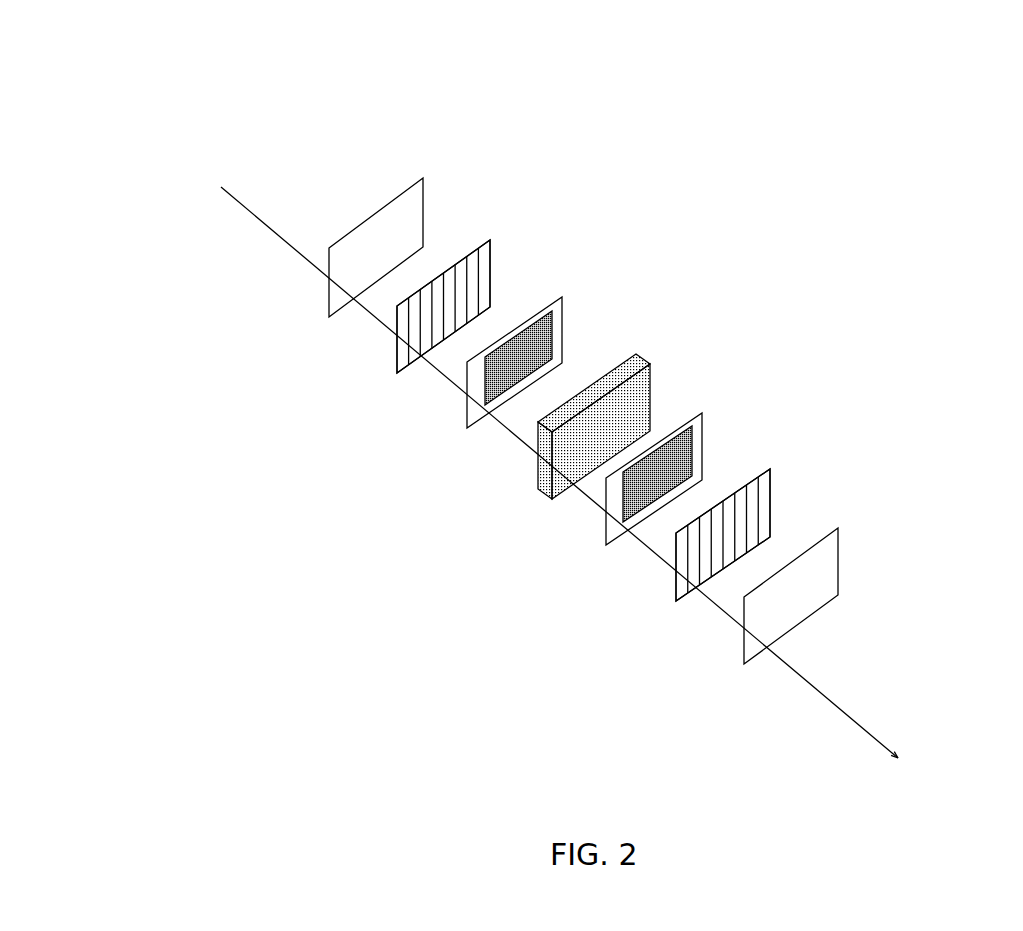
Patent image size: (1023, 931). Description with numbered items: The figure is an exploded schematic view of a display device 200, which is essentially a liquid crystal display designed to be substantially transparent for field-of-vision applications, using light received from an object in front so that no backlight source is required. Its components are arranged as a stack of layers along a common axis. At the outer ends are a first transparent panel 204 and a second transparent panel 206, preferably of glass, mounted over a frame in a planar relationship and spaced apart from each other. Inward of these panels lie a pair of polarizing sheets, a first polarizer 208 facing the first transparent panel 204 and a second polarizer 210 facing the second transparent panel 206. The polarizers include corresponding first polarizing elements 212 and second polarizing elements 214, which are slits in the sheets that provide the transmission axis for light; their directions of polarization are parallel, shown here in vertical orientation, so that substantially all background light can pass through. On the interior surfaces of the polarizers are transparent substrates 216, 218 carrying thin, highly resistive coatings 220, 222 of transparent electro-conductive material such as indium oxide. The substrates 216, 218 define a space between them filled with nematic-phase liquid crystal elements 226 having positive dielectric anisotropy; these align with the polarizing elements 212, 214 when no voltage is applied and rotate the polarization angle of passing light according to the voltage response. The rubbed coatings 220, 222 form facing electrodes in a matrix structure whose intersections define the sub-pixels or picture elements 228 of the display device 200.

The display device 200 is at (176, 107).
The first transparent panel 204 is at (329, 317).
The second transparent panel 206 is at (744, 664).
The first polarizer 208 is at (397, 373).
The second polarizer 210 is at (676, 601).
The first polarizing elements 212 is at (490, 266).
The second polarizing elements 214 is at (770, 497).
The first transparent substrate 216 is at (467, 428).
The second transparent substrate 218 is at (606, 545).
The coating 220 is at (562, 340).
The coating 222 is at (700, 440).
The liquid crystal elements 226 is at (538, 489).
The picture elements 228 is at (564, 400).